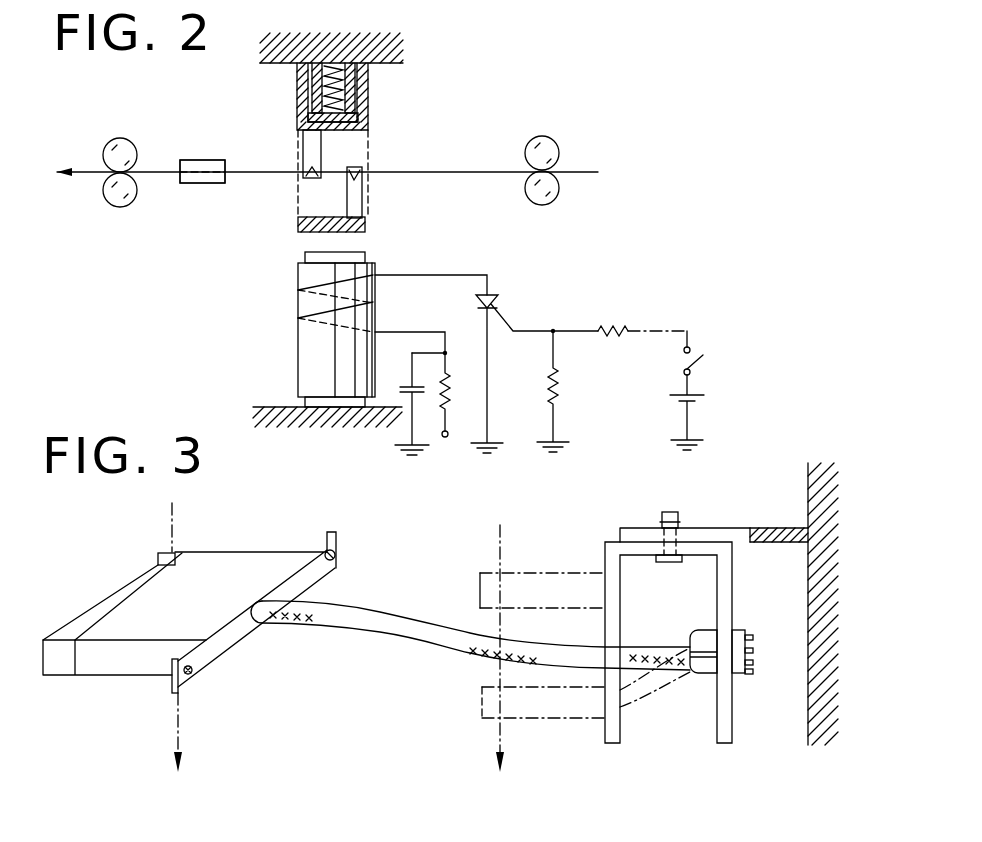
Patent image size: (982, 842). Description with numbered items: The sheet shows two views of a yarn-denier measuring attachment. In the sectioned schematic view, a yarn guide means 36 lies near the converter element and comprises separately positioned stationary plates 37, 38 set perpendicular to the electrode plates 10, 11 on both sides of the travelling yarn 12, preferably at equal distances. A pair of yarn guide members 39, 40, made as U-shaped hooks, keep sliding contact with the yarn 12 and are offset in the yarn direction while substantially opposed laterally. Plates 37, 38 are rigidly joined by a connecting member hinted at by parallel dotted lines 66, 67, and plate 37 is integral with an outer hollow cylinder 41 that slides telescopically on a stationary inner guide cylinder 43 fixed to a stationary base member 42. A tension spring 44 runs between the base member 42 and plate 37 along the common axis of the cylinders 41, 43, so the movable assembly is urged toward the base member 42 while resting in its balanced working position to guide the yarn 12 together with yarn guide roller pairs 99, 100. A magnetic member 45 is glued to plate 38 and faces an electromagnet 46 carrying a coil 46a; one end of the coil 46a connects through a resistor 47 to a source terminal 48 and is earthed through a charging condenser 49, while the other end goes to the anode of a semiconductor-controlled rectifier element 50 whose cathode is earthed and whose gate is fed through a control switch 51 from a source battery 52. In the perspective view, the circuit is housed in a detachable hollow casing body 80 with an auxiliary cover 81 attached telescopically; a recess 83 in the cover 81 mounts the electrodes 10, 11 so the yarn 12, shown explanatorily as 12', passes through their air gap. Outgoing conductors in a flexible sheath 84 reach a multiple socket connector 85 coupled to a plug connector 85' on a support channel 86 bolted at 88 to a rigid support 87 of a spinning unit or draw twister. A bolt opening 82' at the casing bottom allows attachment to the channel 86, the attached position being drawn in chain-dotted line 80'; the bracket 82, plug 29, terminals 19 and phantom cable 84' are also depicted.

In FIG. 2, the travelling yarn 12 is at (327, 207).
In FIG. 3, the travelling yarn 12 is at (519, 641).
In FIG. 2, the yarn guide roller pair 99 is at (122, 148).
In FIG. 2, the electrode plate 10 is at (195, 160).
In FIG. 2, the electrode plate 11 is at (202, 171).
In FIG. 2, the yarn guide roller pair 100 is at (545, 147).
In FIG. 2, the stationary base member 42 is at (385, 62).
In FIG. 2, the yarn guide means 36 is at (292, 95).
In FIG. 3, the yarn guide means 36 is at (562, 573).
In FIG. 2, the stationary plate 37 is at (350, 132).
In FIG. 2, the outer hollow cylinder 41 is at (369, 105).
In FIG. 2, the stationary inner guide cylinder 43 is at (348, 85).
In FIG. 2, the tension spring 44 is at (338, 116).
In FIG. 2, the yarn guide member 39 is at (310, 152).
In FIG. 2, the yarn guide member 40 is at (355, 205).
In FIG. 2, the stationary plate 38 is at (362, 220).
In FIG. 2, the magnetic member 45 is at (303, 229).
In FIG. 2, the dotted line 66 is at (298, 200).
In FIG. 2, the dotted line 67 is at (367, 163).
In FIG. 2, the electromagnet 46 is at (298, 356).
In FIG. 2, the coil 46a is at (322, 283).
In FIG. 2, the charging condenser 49 is at (412, 385).
In FIG. 2, the resistor 47 is at (452, 395).
In FIG. 2, the source terminal 48 is at (445, 437).
In FIG. 2, the semiconductor-controlled rectifier element 50 is at (490, 293).
In FIG. 2, the control switch 51 is at (700, 366).
In FIG. 2, the source battery 52 is at (694, 398).
In FIG. 3, the auxiliary cover 81 is at (100, 598).
In FIG. 3, the detachable hollow casing body 80 is at (255, 587).
In FIG. 3, the recess 83 is at (158, 560).
In FIG. 3, the yarn 12' is at (201, 632).
In FIG. 3, the bracket 82 is at (356, 534).
In FIG. 3, the bolt opening 82' is at (216, 683).
In FIG. 3, the flexible sheath 84 is at (470, 640).
In FIG. 3, the attached position of casing body 80' is at (505, 698).
In FIG. 3, the support channel 86 is at (733, 586).
In FIG. 3, the rigid support 87 is at (770, 528).
In FIG. 3, the bolt 88 is at (680, 516).
In FIG. 3, the multiple socket connector 85 is at (695, 678).
In FIG. 3, the plug connector 85' is at (758, 678).
In FIG. 3, the plug 29 is at (752, 635).
In FIG. 3, the terminals 19 is at (753, 650).
In FIG. 3, the cable phantom position 84' is at (655, 707).